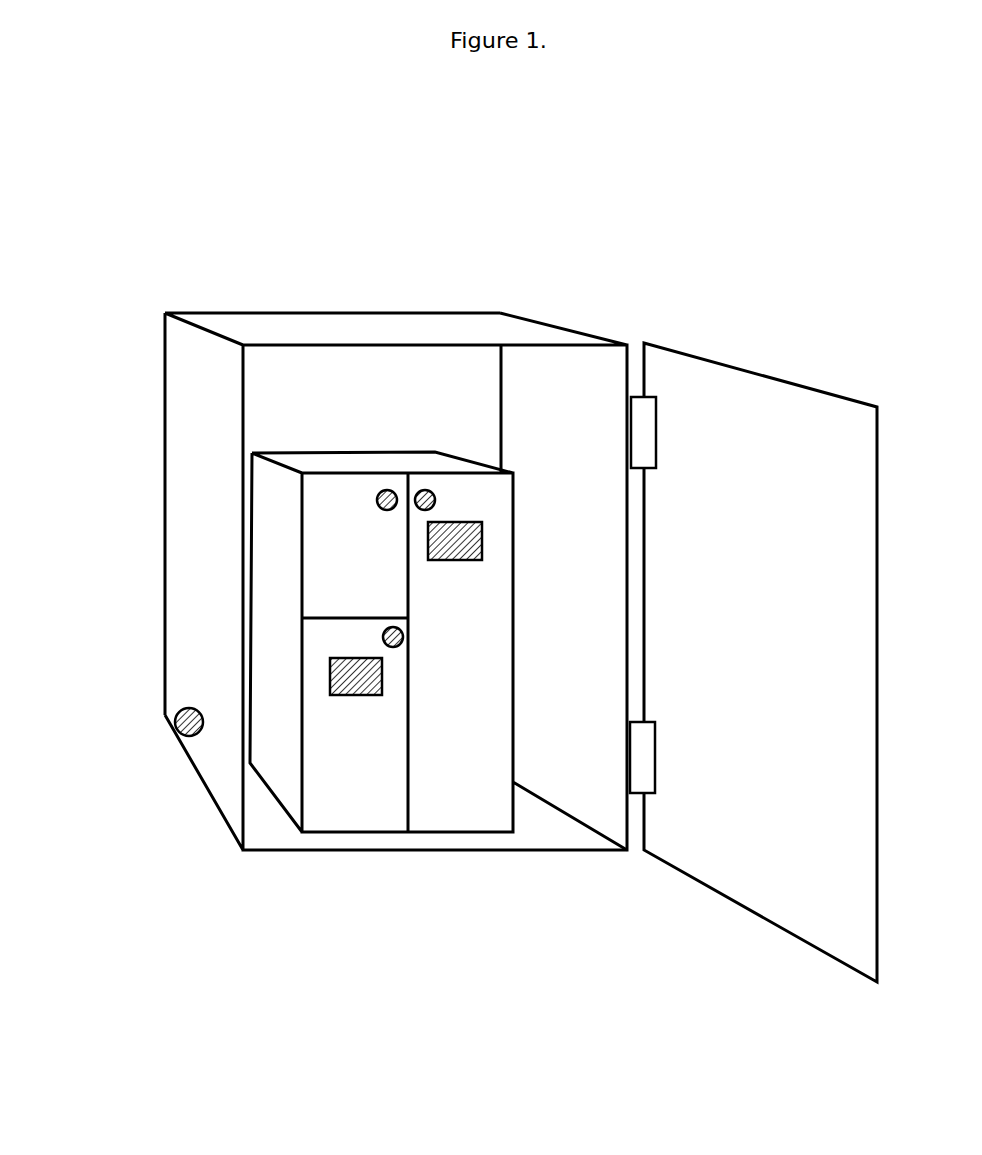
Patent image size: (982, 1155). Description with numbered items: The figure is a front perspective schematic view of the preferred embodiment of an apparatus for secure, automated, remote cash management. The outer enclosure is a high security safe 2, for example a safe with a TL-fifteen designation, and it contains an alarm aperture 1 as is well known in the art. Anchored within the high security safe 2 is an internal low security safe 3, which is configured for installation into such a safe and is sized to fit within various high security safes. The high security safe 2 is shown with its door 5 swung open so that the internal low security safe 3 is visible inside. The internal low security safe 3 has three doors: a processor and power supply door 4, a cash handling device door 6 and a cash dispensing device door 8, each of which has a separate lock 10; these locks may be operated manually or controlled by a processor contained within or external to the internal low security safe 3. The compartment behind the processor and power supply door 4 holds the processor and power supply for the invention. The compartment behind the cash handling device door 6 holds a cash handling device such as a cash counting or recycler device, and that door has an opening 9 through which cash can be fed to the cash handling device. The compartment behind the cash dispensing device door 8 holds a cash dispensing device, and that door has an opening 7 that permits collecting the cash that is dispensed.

The alarm aperture 1 is at (190, 735).
The high security safe 2 is at (324, 345).
The internal low security safe 3 is at (352, 452).
The processor and power supply door 4 is at (383, 562).
The door 5 is at (702, 363).
The cash handling device door 6 is at (492, 638).
The opening 7 is at (455, 522).
The cash dispensing device door 8 is at (447, 715).
The opening 9 is at (357, 677).
The lock 10 is at (415, 503).